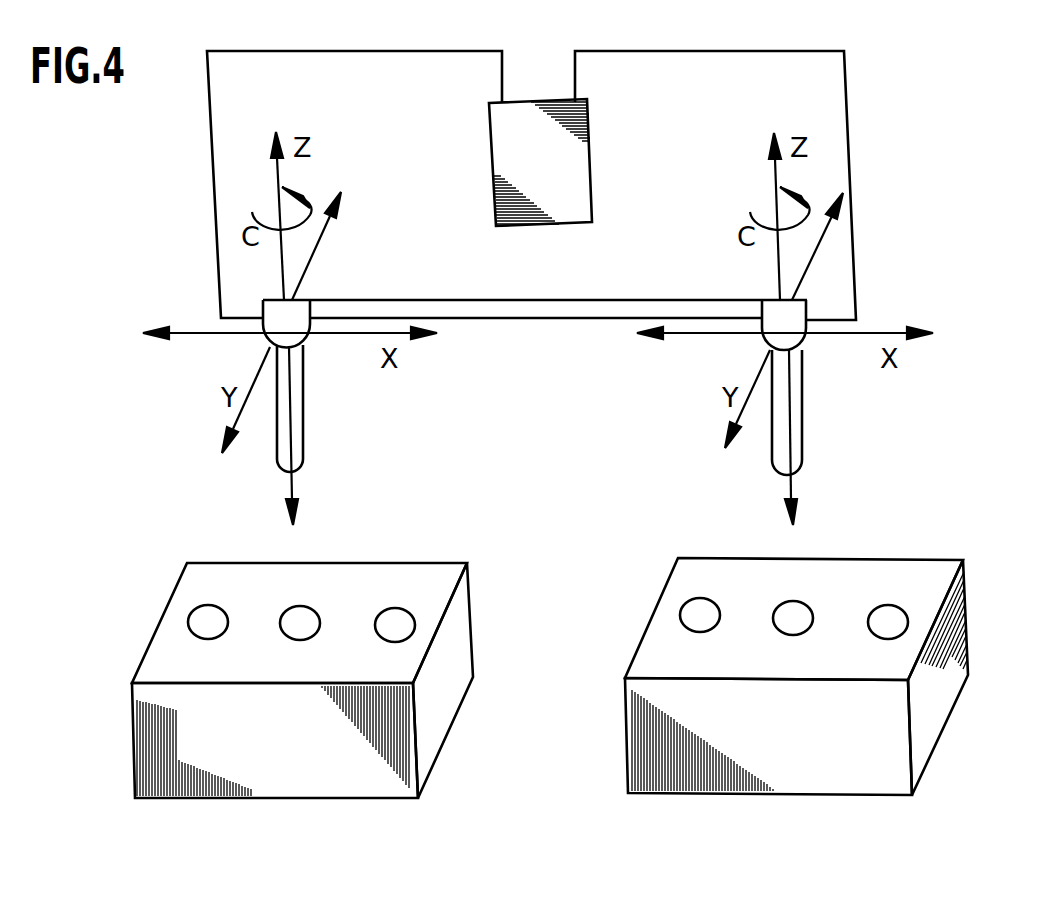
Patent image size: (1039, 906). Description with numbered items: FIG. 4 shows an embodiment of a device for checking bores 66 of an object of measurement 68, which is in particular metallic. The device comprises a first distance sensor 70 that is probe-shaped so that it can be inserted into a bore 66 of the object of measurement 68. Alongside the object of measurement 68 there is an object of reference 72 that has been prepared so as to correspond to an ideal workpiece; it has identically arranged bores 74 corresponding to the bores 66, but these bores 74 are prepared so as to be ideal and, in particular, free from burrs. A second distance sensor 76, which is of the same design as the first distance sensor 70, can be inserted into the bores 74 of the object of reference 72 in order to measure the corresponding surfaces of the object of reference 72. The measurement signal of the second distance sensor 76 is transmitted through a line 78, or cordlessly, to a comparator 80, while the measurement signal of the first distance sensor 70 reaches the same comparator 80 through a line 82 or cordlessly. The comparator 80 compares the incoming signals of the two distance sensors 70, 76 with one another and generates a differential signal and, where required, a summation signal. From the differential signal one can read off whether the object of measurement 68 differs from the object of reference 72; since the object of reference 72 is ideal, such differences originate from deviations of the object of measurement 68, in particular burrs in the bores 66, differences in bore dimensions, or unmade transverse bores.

The line 78 is at (207, 105).
The line 82 is at (851, 148).
The comparator 80 is at (572, 183).
The second distance sensor 76 is at (295, 402).
The first distance sensor 70 is at (797, 410).
The bores 74 is at (288, 614).
The bores 66 is at (777, 614).
The object of reference 72 is at (445, 700).
The object of measurement 68 is at (943, 692).